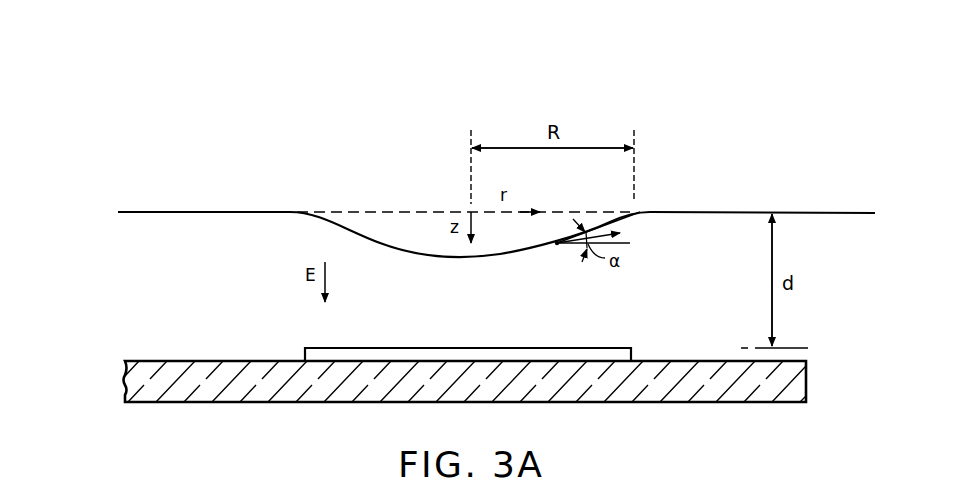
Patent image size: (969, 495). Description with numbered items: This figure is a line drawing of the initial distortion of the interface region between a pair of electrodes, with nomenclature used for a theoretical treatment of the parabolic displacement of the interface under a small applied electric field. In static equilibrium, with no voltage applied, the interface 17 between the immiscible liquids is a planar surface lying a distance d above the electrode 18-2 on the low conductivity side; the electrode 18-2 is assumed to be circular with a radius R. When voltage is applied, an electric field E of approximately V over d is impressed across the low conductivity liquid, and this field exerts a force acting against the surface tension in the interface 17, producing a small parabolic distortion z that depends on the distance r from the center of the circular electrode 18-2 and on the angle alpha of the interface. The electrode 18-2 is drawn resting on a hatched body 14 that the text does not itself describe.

The interface 17 is at (162, 212).
The electrode 18-2 is at (631, 348).
The substrate 14 is at (792, 378).